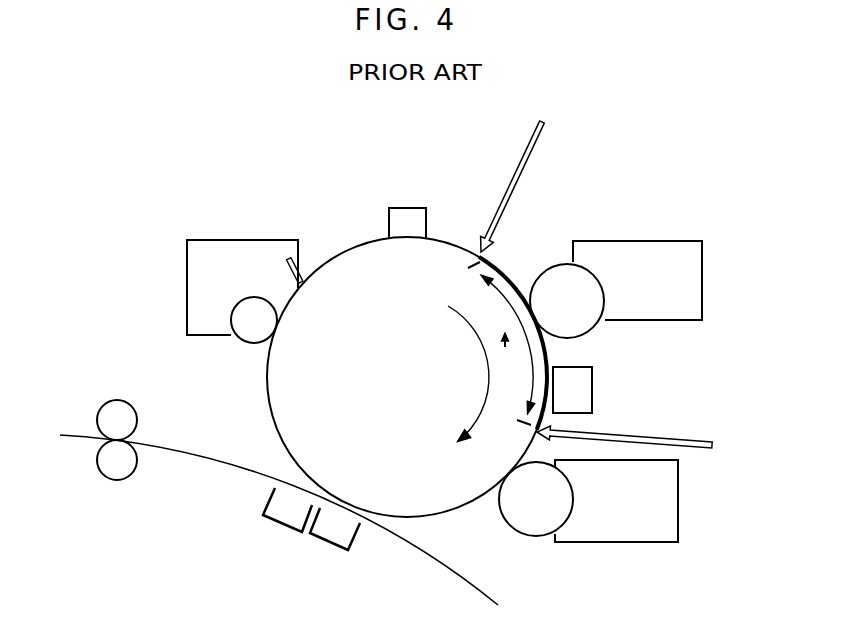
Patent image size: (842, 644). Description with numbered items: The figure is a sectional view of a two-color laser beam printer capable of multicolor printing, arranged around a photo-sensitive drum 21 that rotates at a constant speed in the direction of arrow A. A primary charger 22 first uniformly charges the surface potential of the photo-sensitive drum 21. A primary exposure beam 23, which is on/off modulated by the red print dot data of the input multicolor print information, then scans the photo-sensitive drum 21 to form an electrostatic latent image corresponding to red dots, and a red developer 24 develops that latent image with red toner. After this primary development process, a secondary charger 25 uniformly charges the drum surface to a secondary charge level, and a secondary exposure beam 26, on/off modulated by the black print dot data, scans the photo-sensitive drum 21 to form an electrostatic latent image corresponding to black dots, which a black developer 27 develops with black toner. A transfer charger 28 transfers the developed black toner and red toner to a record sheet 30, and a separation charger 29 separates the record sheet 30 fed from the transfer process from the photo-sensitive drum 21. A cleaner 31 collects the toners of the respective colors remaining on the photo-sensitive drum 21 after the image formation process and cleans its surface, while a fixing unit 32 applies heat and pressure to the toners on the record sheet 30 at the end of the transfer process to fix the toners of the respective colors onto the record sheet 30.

The photo-sensitive drum 21 is at (354, 247).
The primary charger 22 is at (410, 208).
The primary exposure beam 23 is at (521, 176).
The red developer 24 is at (641, 241).
The secondary charger 25 is at (592, 384).
The secondary exposure beam 26 is at (673, 439).
The black developer 27 is at (678, 518).
The transfer charger 28 is at (327, 541).
The separation charger 29 is at (283, 524).
The record sheet 30 is at (488, 597).
The cleaner 31 is at (253, 240).
The fixing unit 32 is at (118, 400).